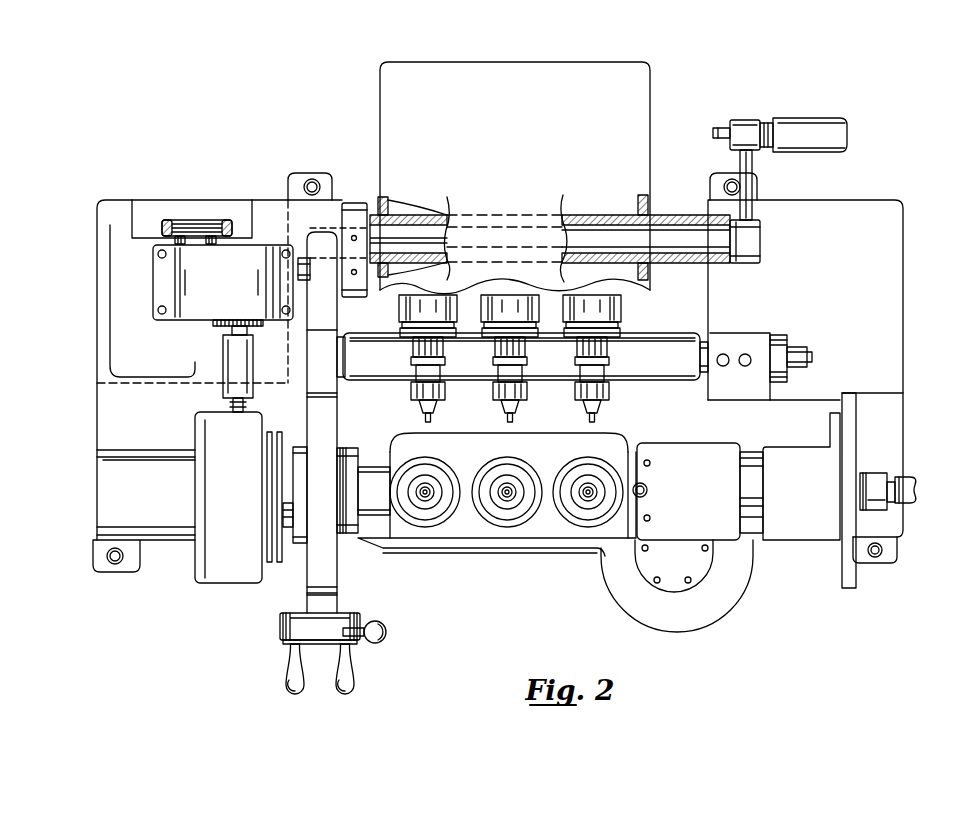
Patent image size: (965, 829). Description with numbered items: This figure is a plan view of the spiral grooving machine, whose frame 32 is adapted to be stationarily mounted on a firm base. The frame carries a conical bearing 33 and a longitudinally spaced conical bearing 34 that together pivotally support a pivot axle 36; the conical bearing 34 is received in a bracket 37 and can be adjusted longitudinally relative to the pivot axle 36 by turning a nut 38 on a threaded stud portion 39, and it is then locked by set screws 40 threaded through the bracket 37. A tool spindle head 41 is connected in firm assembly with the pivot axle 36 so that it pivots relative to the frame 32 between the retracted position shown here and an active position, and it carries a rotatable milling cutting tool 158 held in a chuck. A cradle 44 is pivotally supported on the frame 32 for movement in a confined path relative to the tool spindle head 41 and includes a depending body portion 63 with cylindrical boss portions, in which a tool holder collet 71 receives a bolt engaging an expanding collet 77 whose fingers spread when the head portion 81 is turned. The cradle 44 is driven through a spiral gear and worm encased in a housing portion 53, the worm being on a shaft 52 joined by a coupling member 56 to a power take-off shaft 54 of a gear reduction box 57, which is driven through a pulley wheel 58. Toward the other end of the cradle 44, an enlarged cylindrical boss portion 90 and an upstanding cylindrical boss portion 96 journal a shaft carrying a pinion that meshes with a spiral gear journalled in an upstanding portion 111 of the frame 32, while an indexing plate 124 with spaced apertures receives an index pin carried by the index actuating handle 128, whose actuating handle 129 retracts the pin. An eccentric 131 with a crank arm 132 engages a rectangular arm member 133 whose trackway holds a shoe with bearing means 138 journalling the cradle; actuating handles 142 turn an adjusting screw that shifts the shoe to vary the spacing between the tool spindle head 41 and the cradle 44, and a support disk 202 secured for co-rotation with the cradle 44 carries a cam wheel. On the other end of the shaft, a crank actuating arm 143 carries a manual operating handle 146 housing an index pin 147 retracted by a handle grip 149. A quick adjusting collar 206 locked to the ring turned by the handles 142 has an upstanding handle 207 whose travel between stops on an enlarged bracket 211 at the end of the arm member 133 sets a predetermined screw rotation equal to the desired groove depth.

The frame 32 is at (100, 418).
The conical bearing 33 is at (342, 336).
The conical bearing 34 is at (700, 381).
The pivot axle 36 is at (367, 373).
The bracket 37 is at (755, 394).
The nut 38 is at (802, 351).
The threaded stud portion 39 is at (809, 361).
The set screws 40 is at (747, 355).
The tool spindle head 41 is at (550, 62).
The cradle 44 is at (287, 513).
The shaft 52 is at (247, 411).
The housing portion 53 is at (210, 467).
The power take-off shaft 54 is at (232, 329).
The coupling member 56 is at (232, 359).
The gear reduction box 57 is at (190, 312).
The pulley wheel 58 is at (197, 220).
The depending body portion 63 is at (502, 548).
The tool holder collet 71 is at (450, 503).
The expanding collet 77 is at (424, 480).
The head portion 81 is at (430, 500).
The enlarged cylindrical boss portion 90 is at (655, 632).
The upstanding cylindrical boss portion 96 is at (677, 592).
The upstanding portion 111 is at (802, 541).
The indexing plate 124 is at (848, 589).
The index actuating handle 128 is at (877, 473).
The actuating handle 129 is at (910, 505).
The eccentric 131 is at (353, 203).
The crank arm 132 is at (320, 282).
The arm member 133 is at (325, 436).
The bearing means 138 is at (302, 520).
The actuating handles 142 is at (333, 694).
The crank actuating arm 143 is at (753, 186).
The manual operating handle 146 is at (767, 120).
The index pin 147 is at (723, 122).
The handle grip 149 is at (813, 128).
The milling cutting tool 158 is at (506, 418).
The support disk 202 is at (268, 506).
The quick adjusting collar 206 is at (283, 633).
The upstanding handle 207 is at (387, 631).
The enlarged bracket 211 is at (280, 622).